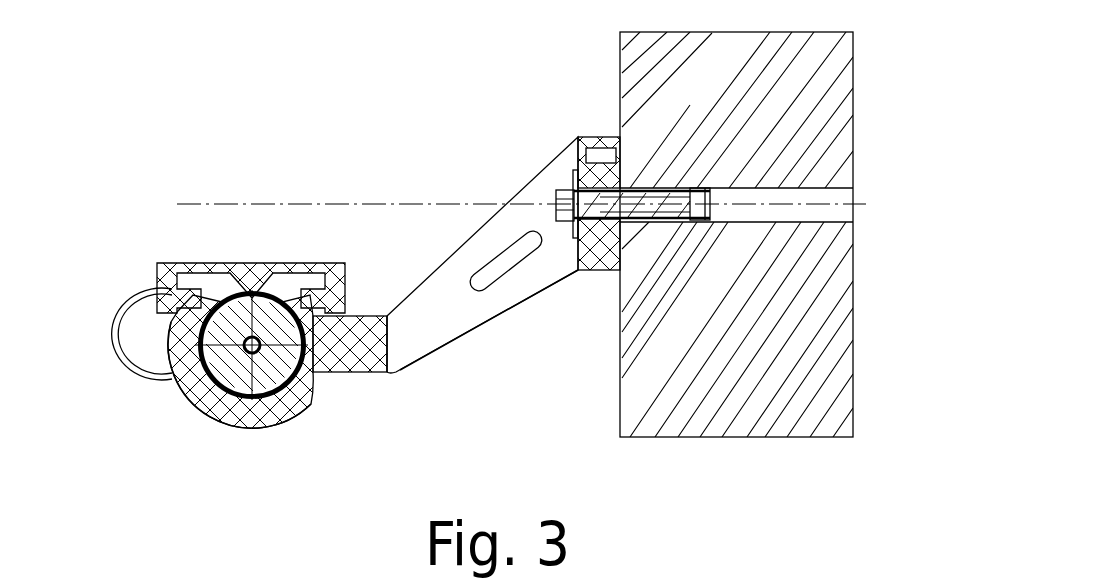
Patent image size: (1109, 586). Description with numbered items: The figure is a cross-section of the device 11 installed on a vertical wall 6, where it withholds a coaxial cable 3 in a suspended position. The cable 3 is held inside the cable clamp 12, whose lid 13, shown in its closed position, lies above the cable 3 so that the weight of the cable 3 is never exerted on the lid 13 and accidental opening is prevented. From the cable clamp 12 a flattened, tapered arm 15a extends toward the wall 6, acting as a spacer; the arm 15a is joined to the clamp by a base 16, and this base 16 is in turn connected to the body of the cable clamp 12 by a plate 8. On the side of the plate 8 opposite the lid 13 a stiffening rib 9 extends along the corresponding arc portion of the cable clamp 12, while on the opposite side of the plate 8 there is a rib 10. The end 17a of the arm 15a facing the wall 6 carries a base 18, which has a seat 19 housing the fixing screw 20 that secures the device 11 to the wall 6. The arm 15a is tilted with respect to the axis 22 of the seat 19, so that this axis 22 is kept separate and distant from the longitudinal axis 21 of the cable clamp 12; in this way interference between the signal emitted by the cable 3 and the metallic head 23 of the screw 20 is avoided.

The coaxial cable 3 is at (264, 376).
The vertical wall 6 is at (830, 130).
The plate 8 is at (337, 373).
The stiffening rib 9 is at (290, 410).
The rib 10 is at (350, 318).
The device 11 is at (387, 120).
The cable clamp 12 is at (127, 442).
The lid 13 is at (212, 262).
The arm 15a is at (460, 267).
The base 16 is at (376, 375).
The end of arm 17a is at (578, 146).
The base 18 is at (605, 137).
The seat 19 is at (633, 186).
The fixing screw 20 is at (710, 223).
The longitudinal axis of cable clamp 21 is at (226, 380).
The axis of seat 22 is at (177, 203).
The metallic head 23 is at (563, 188).